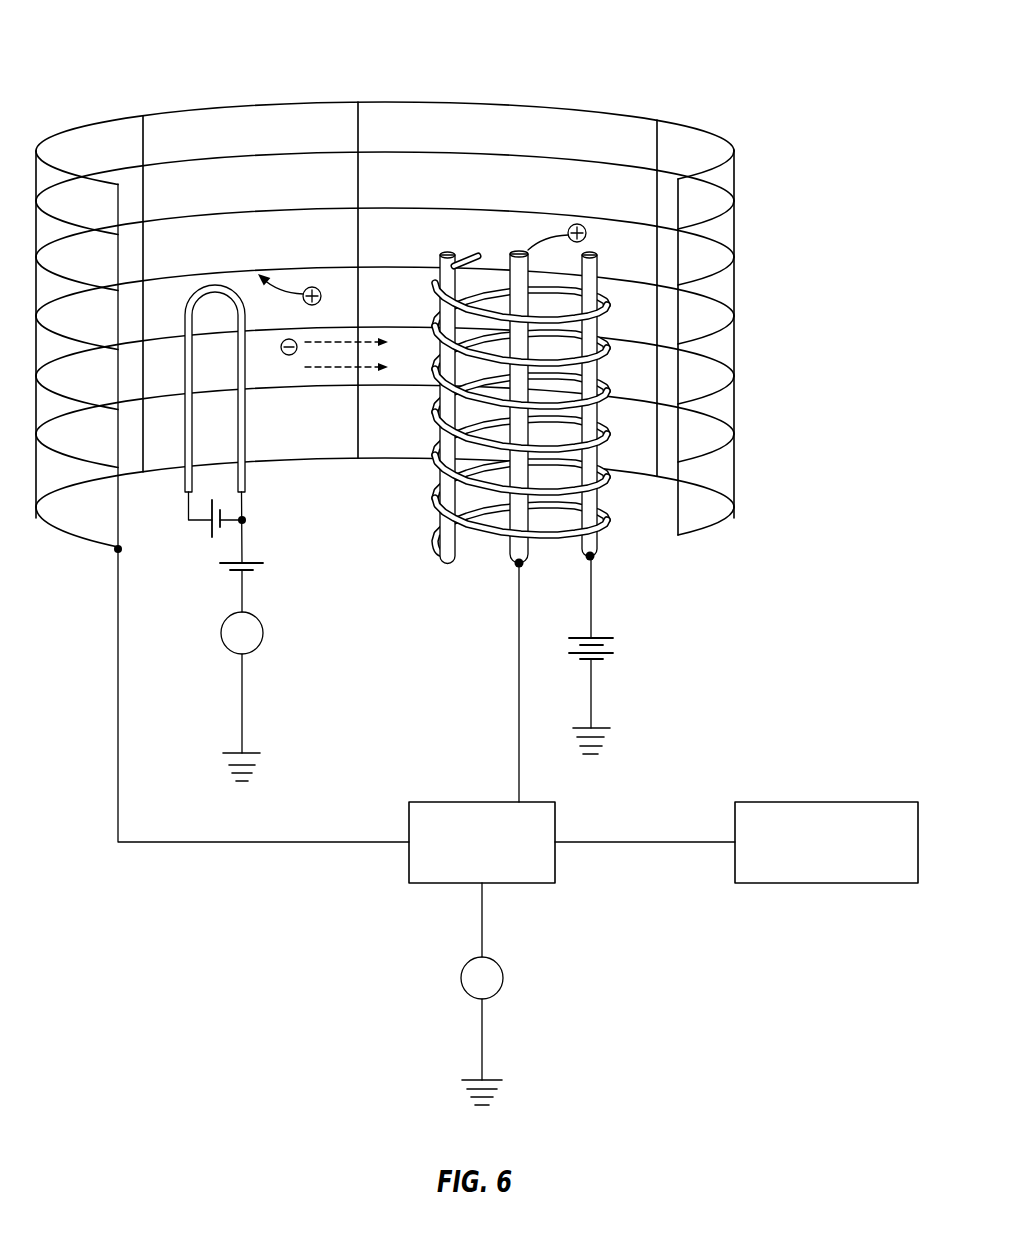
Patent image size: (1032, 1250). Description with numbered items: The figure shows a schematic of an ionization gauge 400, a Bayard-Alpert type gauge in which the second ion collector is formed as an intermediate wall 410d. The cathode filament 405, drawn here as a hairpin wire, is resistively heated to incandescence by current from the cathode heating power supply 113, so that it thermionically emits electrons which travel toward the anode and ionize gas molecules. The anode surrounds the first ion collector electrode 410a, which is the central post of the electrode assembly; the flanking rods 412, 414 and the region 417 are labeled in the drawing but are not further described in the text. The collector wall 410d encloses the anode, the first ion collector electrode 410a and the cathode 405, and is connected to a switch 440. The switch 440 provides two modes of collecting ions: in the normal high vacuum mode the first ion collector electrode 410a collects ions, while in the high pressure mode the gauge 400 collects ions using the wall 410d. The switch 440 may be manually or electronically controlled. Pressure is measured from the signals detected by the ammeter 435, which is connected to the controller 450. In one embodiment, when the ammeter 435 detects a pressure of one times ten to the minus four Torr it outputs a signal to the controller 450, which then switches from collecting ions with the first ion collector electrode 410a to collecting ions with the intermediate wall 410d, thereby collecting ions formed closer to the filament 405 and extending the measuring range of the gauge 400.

The ionization gauge 400 is at (731, 49).
The cathode filament 405 is at (216, 284).
The first electrode rod 412 is at (444, 252).
The first ion collector electrode 410a is at (530, 246).
The second electrode rod 414 is at (591, 253).
The intermediate wall 410d is at (738, 412).
The cathode heating power supply 113 is at (212, 542).
The ionization region 417 is at (313, 510).
The switch 440 is at (430, 801).
The controller 450 is at (830, 801).
The ammeter 435 is at (504, 978).